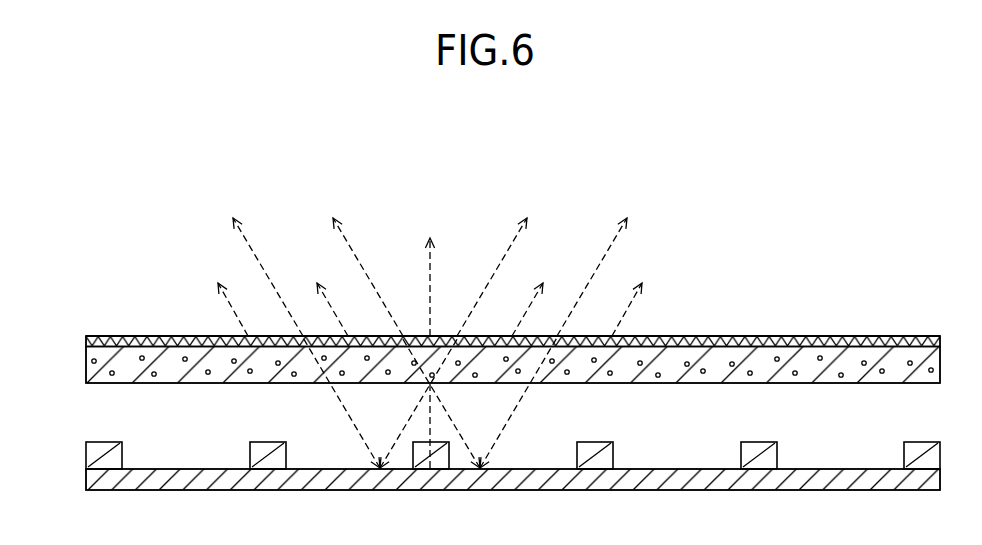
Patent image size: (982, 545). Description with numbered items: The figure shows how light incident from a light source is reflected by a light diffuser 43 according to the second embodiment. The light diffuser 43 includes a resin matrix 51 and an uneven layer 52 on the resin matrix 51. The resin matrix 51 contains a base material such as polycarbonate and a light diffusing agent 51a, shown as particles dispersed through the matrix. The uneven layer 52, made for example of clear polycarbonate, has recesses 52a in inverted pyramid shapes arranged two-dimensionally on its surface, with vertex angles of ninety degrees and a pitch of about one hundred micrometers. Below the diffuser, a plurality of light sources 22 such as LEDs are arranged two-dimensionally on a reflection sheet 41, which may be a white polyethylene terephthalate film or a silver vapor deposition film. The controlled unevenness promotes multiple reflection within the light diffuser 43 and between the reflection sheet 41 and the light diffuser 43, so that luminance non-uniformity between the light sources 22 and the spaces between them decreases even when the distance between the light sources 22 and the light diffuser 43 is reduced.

The light diffuser 43 is at (482, 348).
The resin matrix 51 is at (491, 385).
The light diffusing agent 51a is at (738, 355).
The uneven layer 52 is at (147, 337).
The recesses 52a is at (227, 337).
The light sources 22 is at (250, 452).
The reflection sheet 41 is at (86, 482).